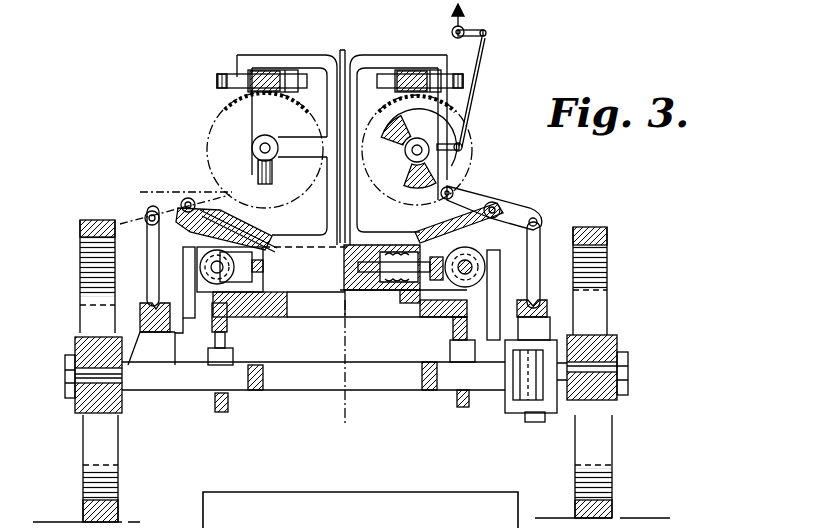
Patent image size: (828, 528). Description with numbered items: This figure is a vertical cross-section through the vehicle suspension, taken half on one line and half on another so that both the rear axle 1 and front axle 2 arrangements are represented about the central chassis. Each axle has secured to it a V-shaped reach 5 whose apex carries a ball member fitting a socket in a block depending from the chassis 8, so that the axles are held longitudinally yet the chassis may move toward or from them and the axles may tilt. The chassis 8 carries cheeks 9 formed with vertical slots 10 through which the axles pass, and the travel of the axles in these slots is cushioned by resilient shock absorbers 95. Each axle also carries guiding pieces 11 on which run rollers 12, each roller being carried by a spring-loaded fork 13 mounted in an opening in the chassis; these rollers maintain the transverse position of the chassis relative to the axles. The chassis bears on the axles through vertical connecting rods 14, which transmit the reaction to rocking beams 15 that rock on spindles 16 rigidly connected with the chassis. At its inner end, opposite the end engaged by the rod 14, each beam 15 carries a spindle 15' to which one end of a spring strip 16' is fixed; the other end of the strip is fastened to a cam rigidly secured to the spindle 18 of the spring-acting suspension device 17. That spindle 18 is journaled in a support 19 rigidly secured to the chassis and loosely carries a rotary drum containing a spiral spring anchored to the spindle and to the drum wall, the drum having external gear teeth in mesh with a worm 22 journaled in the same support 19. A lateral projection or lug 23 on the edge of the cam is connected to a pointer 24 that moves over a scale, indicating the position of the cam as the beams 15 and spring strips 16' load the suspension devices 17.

The rear axle 1 is at (309, 382).
The front axle 2 is at (359, 385).
The V-shaped reach 5 is at (260, 390).
The resilient shock absorber 95 is at (213, 372).
The chassis 8 is at (281, 311).
The cheeks 9 is at (229, 322).
The vertical slots 10 is at (234, 354).
The guiding pieces 11 is at (187, 320).
The roller 12 is at (265, 290).
The spring-loaded fork 13 is at (386, 288).
The vertical connecting rod 14 is at (150, 270).
The rocking beam 15 is at (224, 207).
The spindle 15' is at (381, 219).
The spindle 16 is at (354, 197).
The spring strip 16' is at (481, 151).
The spring-acting suspension device 17 is at (228, 122).
The spindle 18 is at (240, 196).
The support 19 is at (293, 151).
The worm 22 is at (411, 74).
The lateral projection or lug 23 is at (463, 143).
The pointer 24 is at (466, 28).